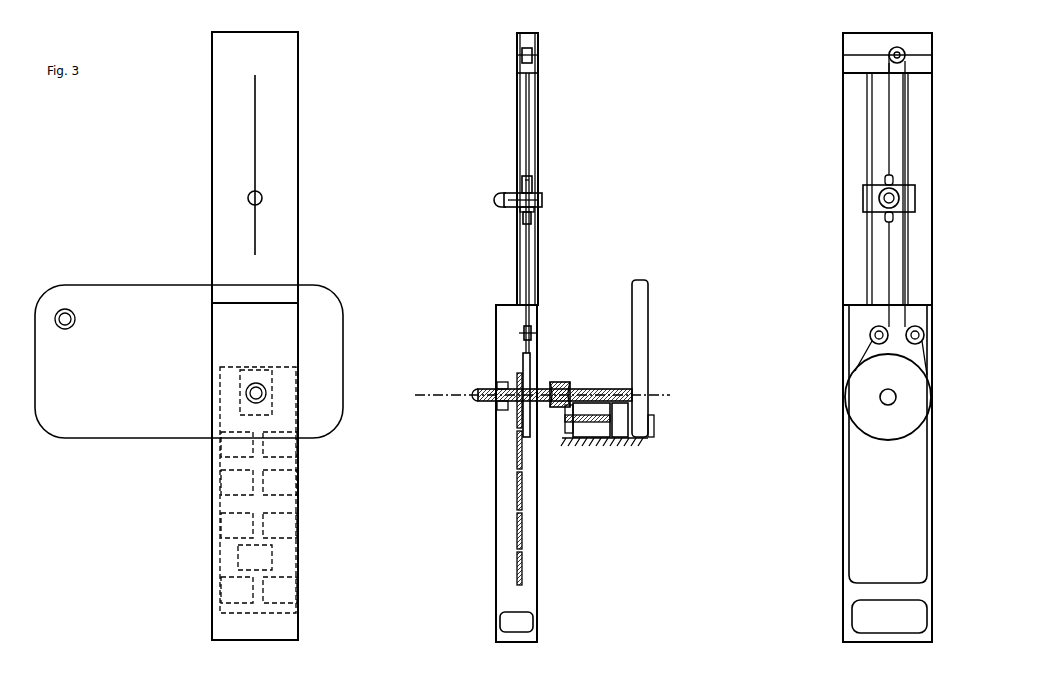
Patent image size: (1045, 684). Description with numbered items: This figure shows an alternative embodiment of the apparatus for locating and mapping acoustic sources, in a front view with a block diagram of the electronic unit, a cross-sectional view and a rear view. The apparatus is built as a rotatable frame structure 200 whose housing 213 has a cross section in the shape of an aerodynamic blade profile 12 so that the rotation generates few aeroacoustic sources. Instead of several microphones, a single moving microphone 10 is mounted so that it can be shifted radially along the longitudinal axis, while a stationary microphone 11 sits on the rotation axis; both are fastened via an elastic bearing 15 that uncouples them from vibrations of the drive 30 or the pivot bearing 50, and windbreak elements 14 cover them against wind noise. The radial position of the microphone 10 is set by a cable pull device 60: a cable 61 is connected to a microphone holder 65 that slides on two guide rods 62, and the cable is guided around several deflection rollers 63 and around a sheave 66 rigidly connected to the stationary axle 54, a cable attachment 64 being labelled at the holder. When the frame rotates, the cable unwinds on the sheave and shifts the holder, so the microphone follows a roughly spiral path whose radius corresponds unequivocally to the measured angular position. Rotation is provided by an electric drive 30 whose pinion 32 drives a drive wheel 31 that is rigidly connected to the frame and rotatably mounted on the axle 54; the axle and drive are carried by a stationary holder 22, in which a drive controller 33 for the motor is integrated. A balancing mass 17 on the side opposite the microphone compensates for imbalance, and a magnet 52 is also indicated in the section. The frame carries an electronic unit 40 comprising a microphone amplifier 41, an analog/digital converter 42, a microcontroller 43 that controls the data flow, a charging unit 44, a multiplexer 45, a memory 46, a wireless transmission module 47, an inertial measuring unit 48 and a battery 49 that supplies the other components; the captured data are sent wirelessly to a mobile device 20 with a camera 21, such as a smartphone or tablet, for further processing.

The frame structure 200 is at (213, 166).
The blade profile 12 is at (220, 156).
The housing 213 is at (275, 180).
The windbreak elements 14 is at (498, 199).
The camera 21 is at (75, 313).
The stationary microphone 11 is at (268, 392).
The mobile device 20 is at (317, 429).
The electronic unit 40 is at (517, 535).
The microphone amplifier 41 is at (193, 462).
The analog/digital converter 42 is at (200, 494).
The microcontroller 43 is at (183, 528).
The charging unit 44 is at (182, 608).
The multiplexer 45 is at (326, 470).
The memory 46 is at (327, 502).
The module for wireless transmission 47 is at (318, 527).
The Inertial measuring unit 48 is at (152, 568).
The battery 49 is at (338, 612).
The deflection rollers 63 is at (889, 53).
The guide rods 62 is at (867, 105).
The Cable attachment 64 is at (880, 177).
The moving microphone 10 is at (878, 196).
The elastic bearing 15 is at (540, 211).
The cable 61 is at (527, 267).
The cable pull device 60 is at (872, 279).
The pivot bearing 50 is at (570, 333).
The drive wheel 31 is at (568, 383).
The axle 54 is at (880, 398).
The Drive controller 33 is at (622, 418).
The holder 22 is at (652, 427).
The drive 30 is at (590, 428).
The pinion 32 is at (578, 442).
The Magnet 52 is at (538, 435).
The balancing mass 17 is at (850, 617).
The microphone holder 65 is at (861, 208).
The sheave 66 is at (856, 380).